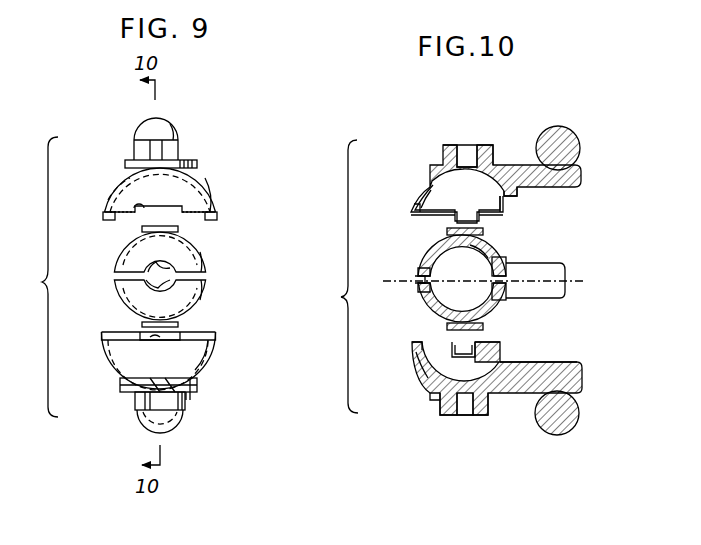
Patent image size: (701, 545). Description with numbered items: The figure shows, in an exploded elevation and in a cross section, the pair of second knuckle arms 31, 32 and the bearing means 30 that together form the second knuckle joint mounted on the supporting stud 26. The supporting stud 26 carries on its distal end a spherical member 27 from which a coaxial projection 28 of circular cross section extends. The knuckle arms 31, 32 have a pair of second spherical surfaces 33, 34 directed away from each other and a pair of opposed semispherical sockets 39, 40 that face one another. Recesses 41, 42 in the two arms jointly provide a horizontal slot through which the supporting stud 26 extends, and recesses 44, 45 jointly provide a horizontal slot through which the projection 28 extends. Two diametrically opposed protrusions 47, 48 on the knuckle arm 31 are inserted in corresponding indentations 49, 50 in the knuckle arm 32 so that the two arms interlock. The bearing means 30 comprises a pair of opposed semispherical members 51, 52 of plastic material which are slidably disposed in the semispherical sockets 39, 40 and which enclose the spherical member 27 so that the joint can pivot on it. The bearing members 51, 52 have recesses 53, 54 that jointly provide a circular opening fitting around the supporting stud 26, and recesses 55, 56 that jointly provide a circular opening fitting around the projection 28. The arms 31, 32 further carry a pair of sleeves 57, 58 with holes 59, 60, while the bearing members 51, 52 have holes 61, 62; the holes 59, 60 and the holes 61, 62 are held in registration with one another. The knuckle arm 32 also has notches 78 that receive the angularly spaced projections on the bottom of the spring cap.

In FIG. 10, the supporting stud 26 is at (568, 280).
In FIG. 10, the spherical member 27 is at (478, 256).
In FIG. 10, the coaxial projection 28 is at (414, 281).
In FIG. 9, the bearing means 30 is at (218, 270).
In FIG. 10, the bearing means 30 is at (512, 318).
In FIG. 9, the second knuckle arm 31 is at (212, 183).
In FIG. 10, the second knuckle arm 31 is at (430, 175).
In FIG. 9, the second knuckle arm 32 is at (216, 356).
In FIG. 10, the second knuckle arm 32 is at (420, 382).
In FIG. 9, the second spherical surface 33 is at (148, 122).
In FIG. 10, the second spherical surface 33 is at (560, 128).
In FIG. 9, the second spherical surface 34 is at (174, 430).
In FIG. 10, the second spherical surface 34 is at (563, 432).
In FIG. 9, the semispherical socket 39 is at (112, 190).
In FIG. 10, the semispherical socket 39 is at (426, 182).
In FIG. 9, the semispherical socket 40 is at (122, 380).
In FIG. 10, the semispherical socket 40 is at (414, 362).
In FIG. 10, the recess 41 is at (518, 195).
In FIG. 10, the recess 42 is at (502, 366).
In FIG. 9, the recess 44 is at (136, 206).
In FIG. 10, the recess 44 is at (415, 206).
In FIG. 9, the recess 45 is at (150, 338).
In FIG. 10, the recess 45 is at (412, 344).
In FIG. 9, the protrusion 47 is at (104, 223).
In FIG. 10, the protrusion 47 is at (503, 216).
In FIG. 9, the protrusion 48 is at (217, 218).
In FIG. 9, the indentation 49 is at (102, 333).
In FIG. 10, the indentation 49 is at (480, 348).
In FIG. 9, the indentation 50 is at (216, 331).
In FIG. 9, the semispherical bearing member 51 is at (206, 258).
In FIG. 10, the semispherical bearing member 51 is at (440, 246).
In FIG. 9, the semispherical bearing member 52 is at (205, 292).
In FIG. 10, the semispherical bearing member 52 is at (432, 305).
In FIG. 10, the recess 53 is at (502, 268).
In FIG. 10, the recess 54 is at (506, 296).
In FIG. 9, the recess 55 is at (146, 268).
In FIG. 10, the recess 55 is at (420, 270).
In FIG. 9, the recess 56 is at (150, 284).
In FIG. 10, the recess 56 is at (424, 288).
In FIG. 9, the sleeve 57 is at (184, 162).
In FIG. 10, the sleeve 57 is at (490, 152).
In FIG. 9, the sleeve 58 is at (188, 396).
In FIG. 10, the sleeve 58 is at (490, 410).
In FIG. 10, the hole 59 is at (463, 145).
In FIG. 10, the hole 60 is at (466, 412).
In FIG. 10, the hole 61 is at (450, 224).
In FIG. 10, the hole 62 is at (456, 350).
In FIG. 9, the notch 78 is at (150, 400).
In FIG. 10, the notch 78 is at (433, 402).